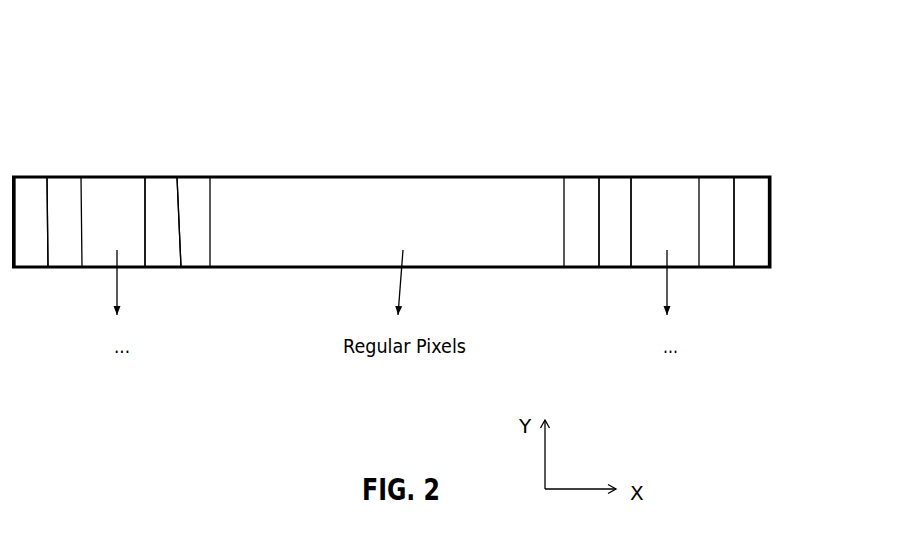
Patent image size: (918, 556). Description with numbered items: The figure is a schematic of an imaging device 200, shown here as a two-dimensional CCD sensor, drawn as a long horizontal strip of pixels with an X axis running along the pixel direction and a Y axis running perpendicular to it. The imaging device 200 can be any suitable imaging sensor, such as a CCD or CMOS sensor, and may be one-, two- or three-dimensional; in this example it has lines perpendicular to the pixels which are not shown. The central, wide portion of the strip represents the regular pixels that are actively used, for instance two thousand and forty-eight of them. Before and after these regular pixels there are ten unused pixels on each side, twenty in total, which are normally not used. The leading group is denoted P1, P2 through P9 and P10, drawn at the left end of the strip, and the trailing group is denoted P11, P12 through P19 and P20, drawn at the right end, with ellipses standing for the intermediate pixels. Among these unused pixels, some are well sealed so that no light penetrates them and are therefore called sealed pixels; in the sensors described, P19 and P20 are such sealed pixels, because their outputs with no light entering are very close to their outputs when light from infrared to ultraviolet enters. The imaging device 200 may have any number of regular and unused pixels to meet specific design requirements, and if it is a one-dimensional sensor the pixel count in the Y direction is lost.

The imaging device 200 is at (88, 112).
The unused pixel P1 is at (31, 250).
The unused pixel P2 is at (70, 250).
The unused pixel P9 is at (162, 250).
The unused pixel P10 is at (198, 250).
The unused pixel P11 is at (584, 250).
The unused pixel P12 is at (618, 250).
The sealed pixel P19 is at (719, 250).
The sealed pixel P20 is at (753, 250).